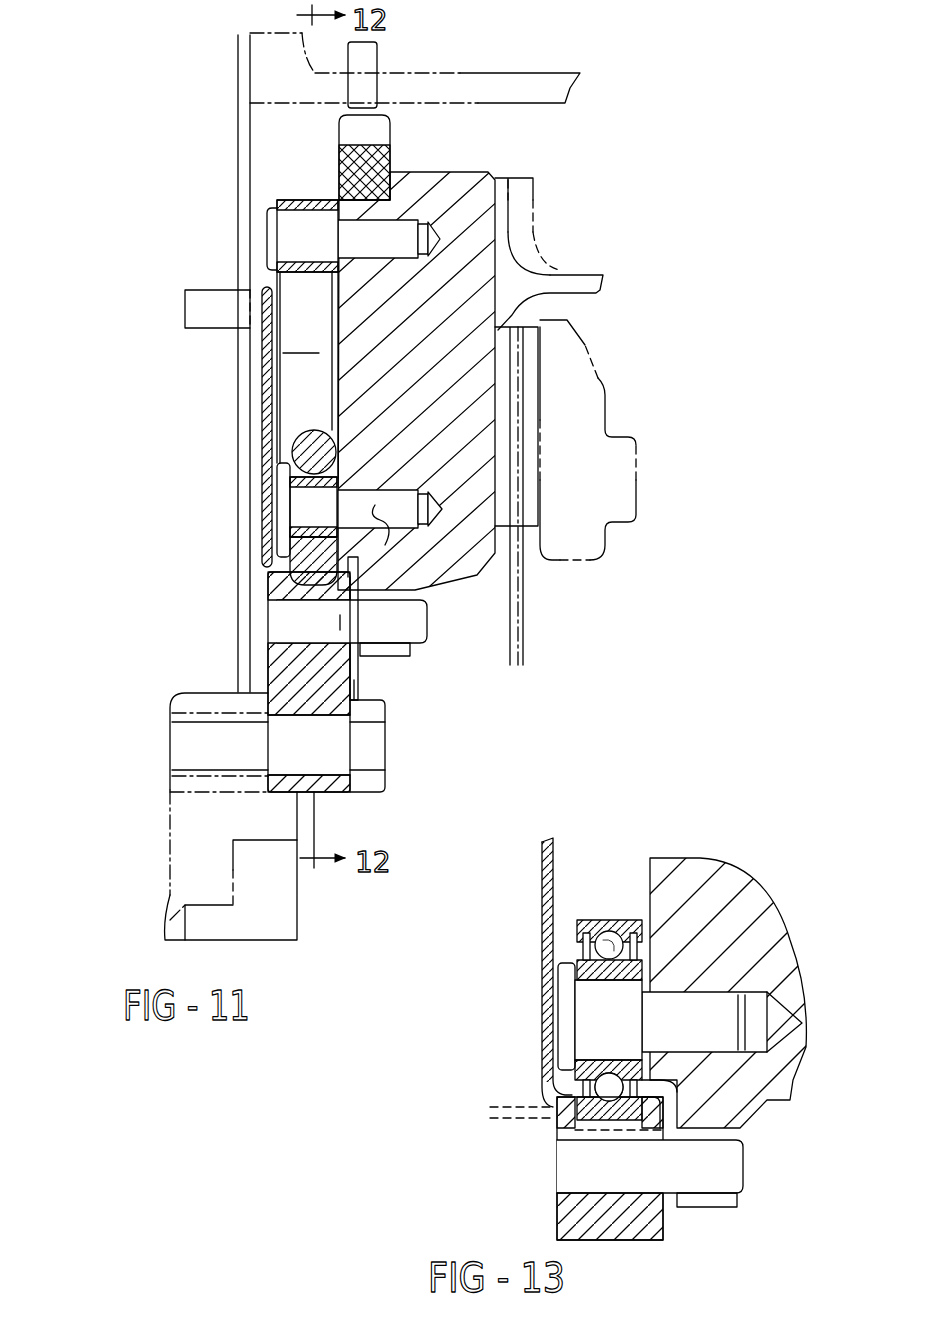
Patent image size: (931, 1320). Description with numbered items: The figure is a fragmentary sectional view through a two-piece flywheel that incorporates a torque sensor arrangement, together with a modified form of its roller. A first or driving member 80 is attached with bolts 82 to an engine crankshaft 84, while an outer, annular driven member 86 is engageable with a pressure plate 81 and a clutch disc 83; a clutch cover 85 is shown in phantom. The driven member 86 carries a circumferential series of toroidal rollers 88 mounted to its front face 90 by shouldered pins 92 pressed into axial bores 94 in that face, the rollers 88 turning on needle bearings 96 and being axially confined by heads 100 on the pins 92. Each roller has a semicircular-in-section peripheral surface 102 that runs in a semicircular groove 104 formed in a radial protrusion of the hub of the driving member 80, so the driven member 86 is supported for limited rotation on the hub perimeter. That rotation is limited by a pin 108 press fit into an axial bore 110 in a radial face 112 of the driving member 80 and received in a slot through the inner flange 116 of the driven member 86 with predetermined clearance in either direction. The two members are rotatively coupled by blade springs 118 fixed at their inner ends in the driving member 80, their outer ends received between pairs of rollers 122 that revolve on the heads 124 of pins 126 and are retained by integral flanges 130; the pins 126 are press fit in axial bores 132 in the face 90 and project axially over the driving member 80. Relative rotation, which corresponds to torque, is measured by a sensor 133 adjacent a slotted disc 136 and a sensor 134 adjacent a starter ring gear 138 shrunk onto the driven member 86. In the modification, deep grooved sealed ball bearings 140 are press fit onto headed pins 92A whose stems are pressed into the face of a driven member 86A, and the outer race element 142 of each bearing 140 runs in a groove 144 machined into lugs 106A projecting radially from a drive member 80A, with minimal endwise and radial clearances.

In FIG. 11, the driving member 80 is at (352, 722).
In FIG. 11, the pressure plate 81 is at (578, 360).
In FIG. 11, the bolts 82 is at (395, 766).
In FIG. 11, the clutch disc 83 is at (585, 282).
In FIG. 11, the engine crankshaft 84 is at (198, 702).
In FIG. 11, the clutch cover 85 is at (540, 243).
In FIG. 11, the driven member 86 is at (499, 568).
In FIG. 11, the rollers 88 is at (304, 438).
In FIG. 11, the front face 90 is at (336, 298).
In FIG. 11, the shouldered pins 92 is at (366, 494).
In FIG. 11, the axial bores 94 is at (394, 539).
In FIG. 11, the needle bearings 96 is at (288, 503).
In FIG. 11, the heads 100 is at (287, 541).
In FIG. 11, the peripheral surface 102 is at (290, 470).
In FIG. 11, the semicircular grooves 104 is at (279, 583).
In FIG. 11, the pin 108 is at (409, 636).
In FIG. 11, the axial bore 110 is at (300, 620).
In FIG. 11, the radial face 112 is at (358, 688).
In FIG. 11, the inner flange 116 is at (397, 654).
In FIG. 11, the blade springs 118 is at (304, 367).
In FIG. 11, the rollers 122 is at (287, 198).
In FIG. 11, the heads 124 is at (322, 216).
In FIG. 11, the pins 126 is at (367, 218).
In FIG. 11, the integral flanges 130 is at (270, 222).
In FIG. 11, the axial bores 132 is at (480, 172).
In FIG. 11, the sensor 133 is at (183, 291).
In FIG. 11, the sensor 134 is at (395, 47).
In FIG. 11, the disc 136 is at (260, 500).
In FIG. 11, the starter ring gear 138 is at (392, 156).
In FIG. 13, the drive member 80A is at (556, 1220).
In FIG. 13, the driven member 86A is at (714, 868).
In FIG. 13, the headed pins 92A is at (697, 1006).
In FIG. 13, the lugs 106A is at (550, 1119).
In FIG. 13, the sealed ball bearings 140 is at (591, 918).
In FIG. 13, the outer race element 142 is at (609, 918).
In FIG. 13, the groove 144 is at (553, 1106).